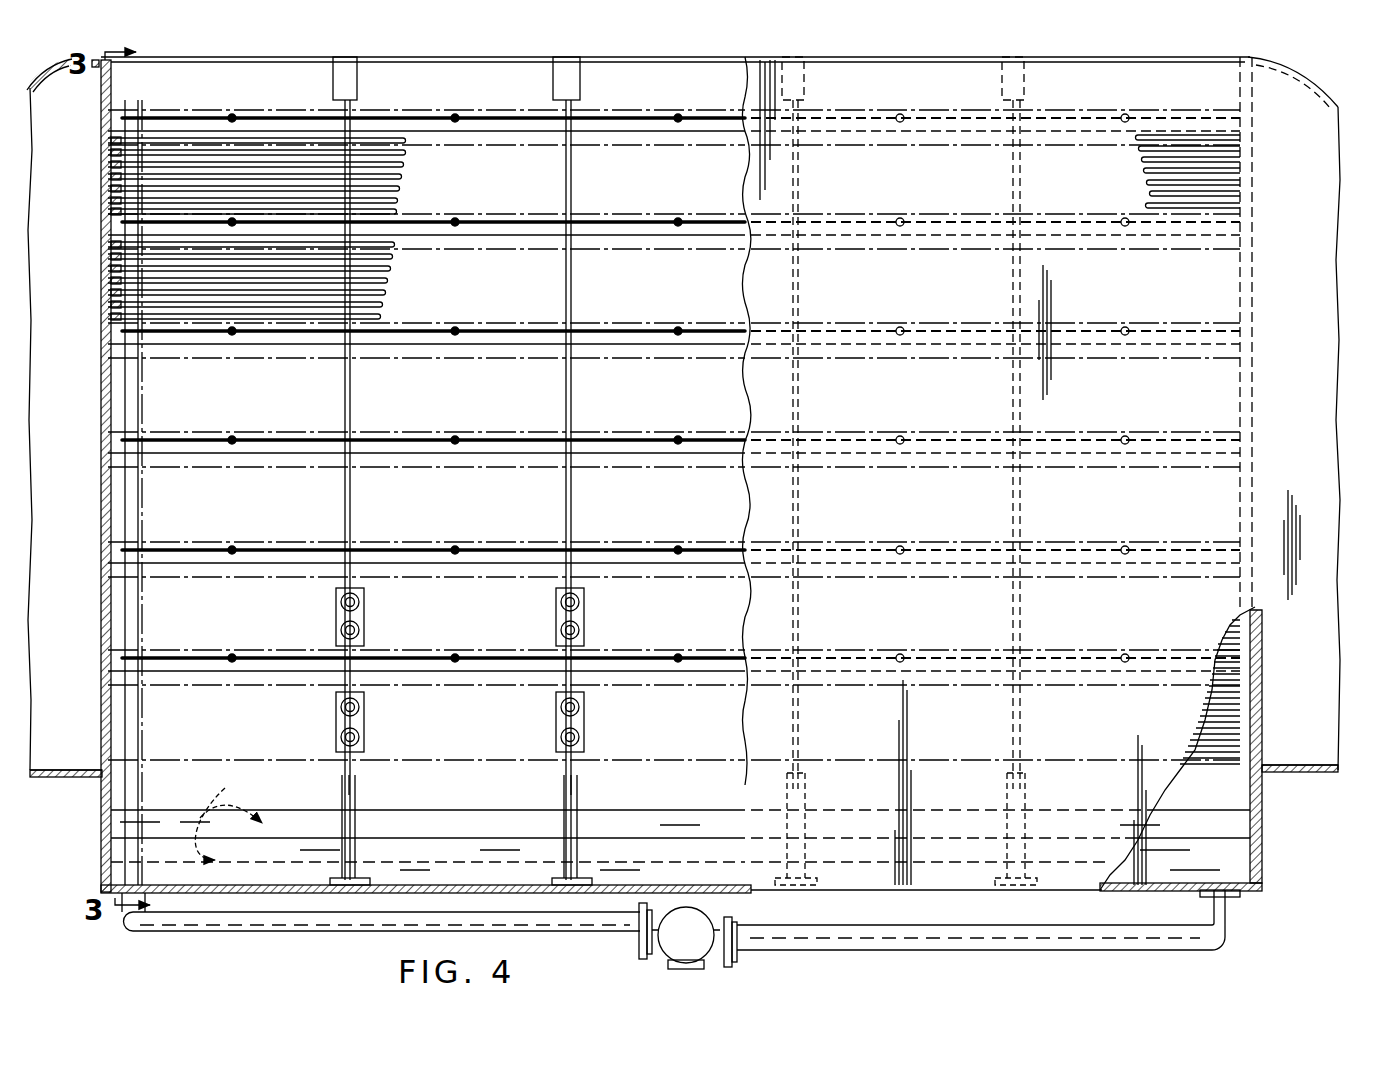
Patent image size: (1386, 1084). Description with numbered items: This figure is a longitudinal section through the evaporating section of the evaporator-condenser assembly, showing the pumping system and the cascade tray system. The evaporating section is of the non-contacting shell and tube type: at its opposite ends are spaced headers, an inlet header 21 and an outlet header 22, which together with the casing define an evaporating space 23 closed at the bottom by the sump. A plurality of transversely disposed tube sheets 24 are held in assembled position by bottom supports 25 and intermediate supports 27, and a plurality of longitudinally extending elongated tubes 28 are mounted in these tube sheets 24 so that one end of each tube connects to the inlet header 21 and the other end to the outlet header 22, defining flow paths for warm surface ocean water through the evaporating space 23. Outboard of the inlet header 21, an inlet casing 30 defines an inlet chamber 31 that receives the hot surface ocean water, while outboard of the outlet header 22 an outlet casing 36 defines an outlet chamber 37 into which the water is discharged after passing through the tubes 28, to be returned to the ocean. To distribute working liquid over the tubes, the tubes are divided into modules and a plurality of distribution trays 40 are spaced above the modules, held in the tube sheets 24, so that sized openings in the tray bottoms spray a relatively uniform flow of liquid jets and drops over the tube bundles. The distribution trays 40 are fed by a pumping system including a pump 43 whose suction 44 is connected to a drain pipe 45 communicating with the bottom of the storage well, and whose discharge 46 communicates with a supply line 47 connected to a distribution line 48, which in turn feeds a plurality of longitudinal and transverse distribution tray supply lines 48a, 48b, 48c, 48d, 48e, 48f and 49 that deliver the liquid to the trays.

The inlet header 21 is at (1262, 650).
The outlet header 22 is at (100, 272).
The evaporating space 23 is at (675, 72).
The tube sheets 24 is at (142, 392).
The bottom supports 25 is at (356, 826).
The intermediate supports 27 is at (365, 625).
The elongated tubes 28 is at (405, 140).
The inlet casing 30 is at (1310, 172).
The inlet chamber 31 is at (1300, 719).
The outlet casing 36 is at (55, 84).
The outlet chamber 37 is at (66, 726).
The distribution trays 40 is at (598, 127).
The pump 43 is at (686, 938).
The suction 44 is at (730, 918).
The drain pipe 45 is at (950, 938).
The discharge 46 is at (645, 935).
The supply line 47 is at (330, 920).
The distribution line 48 is at (142, 510).
The distribution tray supply line 48a is at (238, 657).
The distribution tray supply line 48b is at (238, 549).
The distribution tray supply line 48c is at (238, 439).
The distribution tray supply line 48d is at (235, 330).
The distribution tray supply line 48e is at (237, 220).
The distribution tray supply line 48f is at (236, 117).
The distribution tray supply lines 49 is at (230, 115).